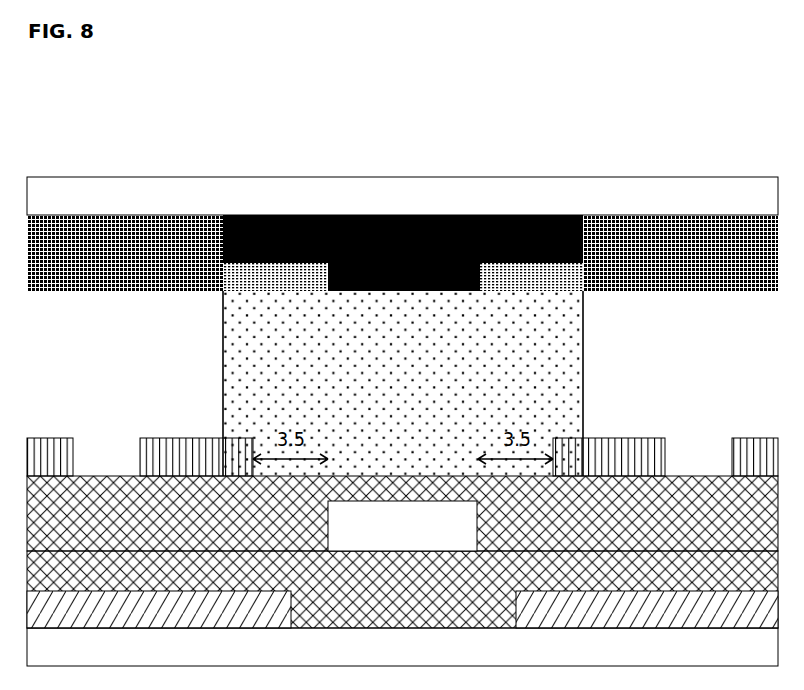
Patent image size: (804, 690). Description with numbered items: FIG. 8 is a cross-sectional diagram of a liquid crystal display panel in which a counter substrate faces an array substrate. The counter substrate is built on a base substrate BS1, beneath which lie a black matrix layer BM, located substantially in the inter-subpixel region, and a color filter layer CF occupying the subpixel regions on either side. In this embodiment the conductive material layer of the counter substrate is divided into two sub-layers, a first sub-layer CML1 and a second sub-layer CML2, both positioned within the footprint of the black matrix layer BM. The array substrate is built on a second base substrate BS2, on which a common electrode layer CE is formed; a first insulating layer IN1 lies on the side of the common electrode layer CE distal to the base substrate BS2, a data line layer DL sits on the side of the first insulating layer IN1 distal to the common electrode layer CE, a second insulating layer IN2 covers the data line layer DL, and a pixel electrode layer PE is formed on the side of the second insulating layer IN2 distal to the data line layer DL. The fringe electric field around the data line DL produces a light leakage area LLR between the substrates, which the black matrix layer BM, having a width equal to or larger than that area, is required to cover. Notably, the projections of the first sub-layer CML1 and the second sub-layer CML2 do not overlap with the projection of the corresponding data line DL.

The base substrate BS1 is at (402, 199).
The base substrate BS2 is at (402, 650).
The color filter layer CF is at (402, 258).
The black matrix layer BM is at (403, 252).
The first sub-layer of the conductive material layer CML1 is at (269, 270).
The second sub-layer of the conductive material layer CML2 is at (524, 270).
The light leakage area LLR is at (493, 333).
The pixel electrode layer PE is at (402, 457).
The first insulating layer IN1 is at (402, 589).
The second insulating layer IN2 is at (402, 513).
The data line layer DL is at (402, 526).
The common electrode layer CE is at (402, 612).